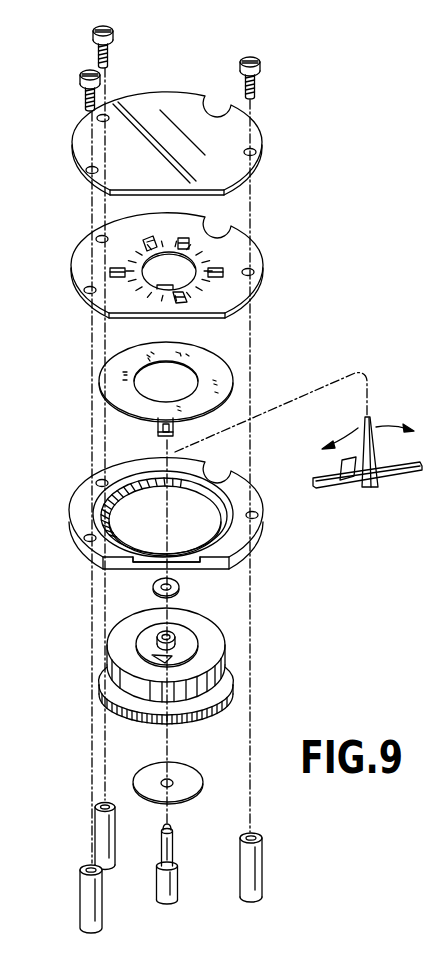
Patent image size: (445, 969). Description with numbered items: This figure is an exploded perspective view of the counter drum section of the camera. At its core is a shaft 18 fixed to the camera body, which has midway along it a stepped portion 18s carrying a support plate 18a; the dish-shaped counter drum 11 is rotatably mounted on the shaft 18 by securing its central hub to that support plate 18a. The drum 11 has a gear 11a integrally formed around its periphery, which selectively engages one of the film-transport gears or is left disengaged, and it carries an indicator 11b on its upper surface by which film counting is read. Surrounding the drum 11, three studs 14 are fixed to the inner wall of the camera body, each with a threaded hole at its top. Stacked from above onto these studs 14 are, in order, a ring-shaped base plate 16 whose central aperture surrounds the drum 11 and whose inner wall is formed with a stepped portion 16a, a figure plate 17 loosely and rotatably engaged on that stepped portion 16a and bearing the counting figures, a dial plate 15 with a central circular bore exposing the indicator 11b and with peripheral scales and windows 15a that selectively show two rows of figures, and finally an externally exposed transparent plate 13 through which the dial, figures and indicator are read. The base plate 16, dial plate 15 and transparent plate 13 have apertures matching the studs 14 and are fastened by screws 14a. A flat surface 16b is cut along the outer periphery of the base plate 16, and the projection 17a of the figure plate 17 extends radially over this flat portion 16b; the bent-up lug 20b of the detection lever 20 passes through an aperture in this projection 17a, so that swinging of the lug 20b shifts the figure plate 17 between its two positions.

The counter drum 11 is at (222, 645).
The gear 11a is at (229, 690).
The indicator 11b is at (155, 656).
The transparent plate 13 is at (250, 164).
The studs 14 is at (97, 895).
The screws 14a is at (100, 84).
The dial plate 15 is at (252, 262).
The windows 15a is at (217, 276).
The base plate 16 is at (80, 522).
The stepped portion 16a is at (227, 516).
The flat surface 16b is at (213, 565).
The figure plate 17 is at (105, 405).
The projection 17a is at (157, 432).
The shaft 18 is at (173, 845).
The support plate 18a is at (183, 771).
The stepped portion 18s is at (178, 885).
The detection lever 20 is at (367, 466).
The bent-up lug 20b is at (369, 442).